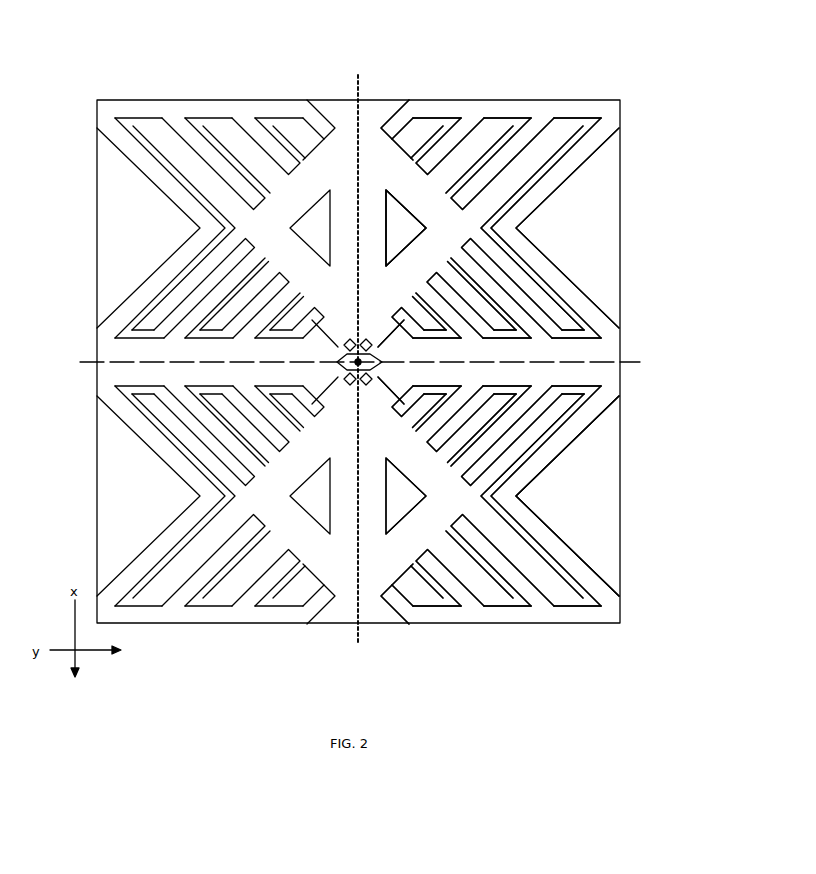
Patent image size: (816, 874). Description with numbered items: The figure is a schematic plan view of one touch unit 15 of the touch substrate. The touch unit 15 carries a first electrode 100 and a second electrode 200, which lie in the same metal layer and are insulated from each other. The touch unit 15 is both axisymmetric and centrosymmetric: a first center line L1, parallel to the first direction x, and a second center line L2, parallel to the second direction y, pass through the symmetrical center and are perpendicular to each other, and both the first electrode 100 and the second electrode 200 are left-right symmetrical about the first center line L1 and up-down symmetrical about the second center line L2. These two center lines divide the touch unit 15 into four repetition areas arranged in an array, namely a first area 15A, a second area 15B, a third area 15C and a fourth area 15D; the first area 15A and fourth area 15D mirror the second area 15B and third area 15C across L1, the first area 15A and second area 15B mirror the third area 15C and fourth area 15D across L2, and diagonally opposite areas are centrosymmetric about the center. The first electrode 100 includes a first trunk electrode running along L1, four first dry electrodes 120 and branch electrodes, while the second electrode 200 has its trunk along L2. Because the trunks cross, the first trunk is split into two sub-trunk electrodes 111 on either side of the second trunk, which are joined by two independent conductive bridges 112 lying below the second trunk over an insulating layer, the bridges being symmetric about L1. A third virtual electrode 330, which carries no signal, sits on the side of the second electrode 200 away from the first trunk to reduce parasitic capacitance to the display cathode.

The touch unit 15 is at (478, 41).
The first area 15A is at (490, 100).
The second area 15B is at (208, 100).
The third area 15C is at (232, 623).
The fourth area 15D is at (522, 623).
The first electrode 100 is at (500, 268).
The sub-trunk electrode 111 is at (350, 195).
The conductive bridge 112 is at (343, 372).
The first dry electrode 120 is at (432, 207).
The second electrode 200 is at (540, 520).
The third virtual electrode 330 is at (598, 555).
The first center line L1 is at (365, 638).
The second center line L2 is at (605, 365).